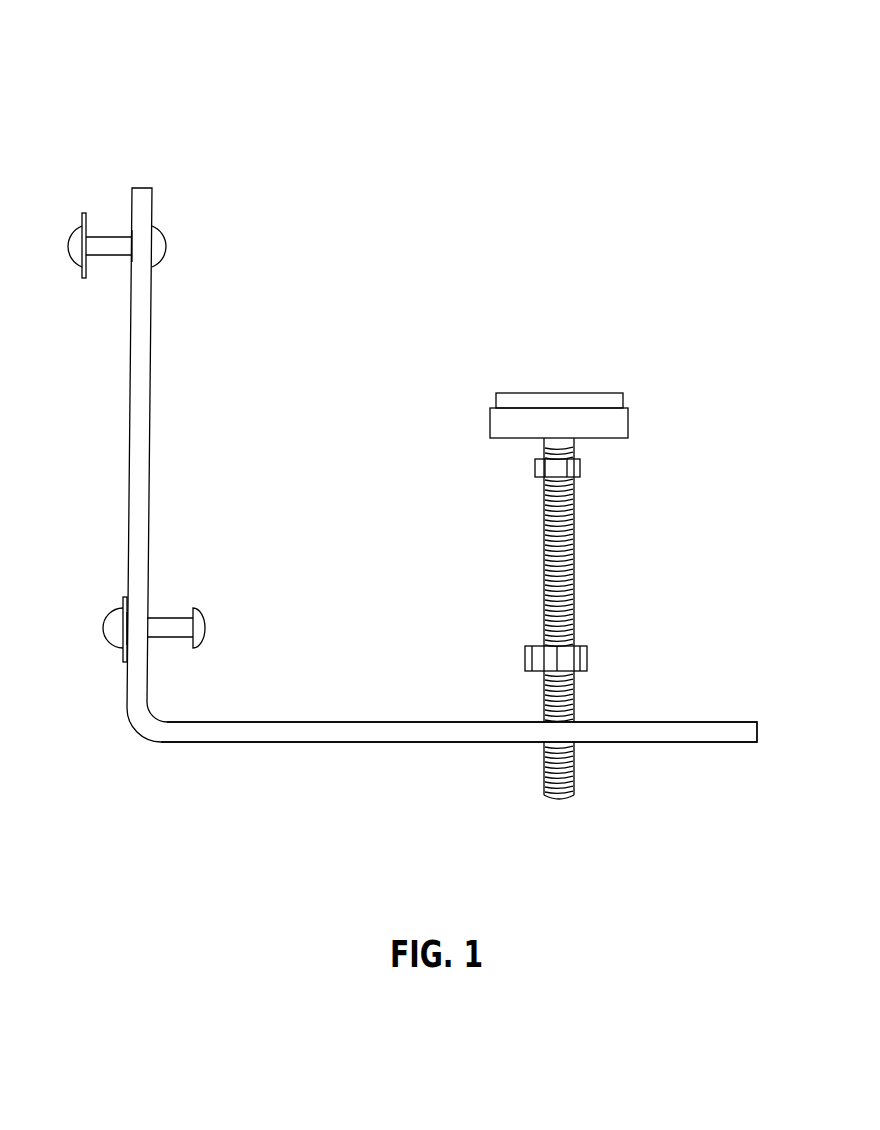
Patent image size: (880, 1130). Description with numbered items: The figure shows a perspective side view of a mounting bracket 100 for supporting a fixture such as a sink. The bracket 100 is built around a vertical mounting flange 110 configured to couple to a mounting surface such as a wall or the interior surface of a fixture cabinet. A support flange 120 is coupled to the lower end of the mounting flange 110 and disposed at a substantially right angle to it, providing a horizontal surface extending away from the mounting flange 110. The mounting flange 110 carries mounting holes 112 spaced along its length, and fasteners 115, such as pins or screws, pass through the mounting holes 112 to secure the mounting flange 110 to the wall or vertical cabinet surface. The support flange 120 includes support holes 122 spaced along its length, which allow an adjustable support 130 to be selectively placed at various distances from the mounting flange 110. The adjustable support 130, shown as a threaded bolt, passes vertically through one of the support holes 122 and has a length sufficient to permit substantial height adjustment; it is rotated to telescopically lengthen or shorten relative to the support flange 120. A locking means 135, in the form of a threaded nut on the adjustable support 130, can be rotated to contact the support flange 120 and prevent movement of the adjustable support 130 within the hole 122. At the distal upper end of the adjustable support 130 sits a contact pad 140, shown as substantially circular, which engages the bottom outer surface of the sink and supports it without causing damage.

The mounting bracket 100 is at (212, 93).
The mounting flange 110 is at (138, 458).
The mounting hole 112 is at (113, 284).
The fastener 115 is at (82, 219).
The support flange 120 is at (652, 733).
The support hole 122 is at (637, 764).
The adjustable support 130 is at (575, 583).
The locking means 135 is at (570, 660).
The contact pad 140 is at (605, 425).